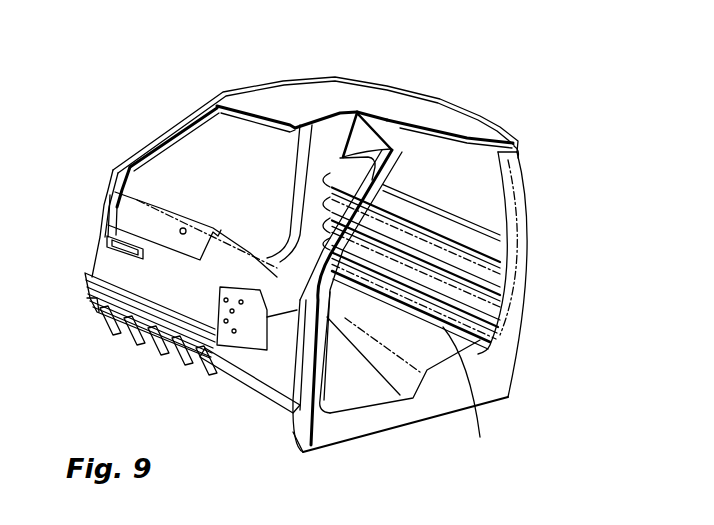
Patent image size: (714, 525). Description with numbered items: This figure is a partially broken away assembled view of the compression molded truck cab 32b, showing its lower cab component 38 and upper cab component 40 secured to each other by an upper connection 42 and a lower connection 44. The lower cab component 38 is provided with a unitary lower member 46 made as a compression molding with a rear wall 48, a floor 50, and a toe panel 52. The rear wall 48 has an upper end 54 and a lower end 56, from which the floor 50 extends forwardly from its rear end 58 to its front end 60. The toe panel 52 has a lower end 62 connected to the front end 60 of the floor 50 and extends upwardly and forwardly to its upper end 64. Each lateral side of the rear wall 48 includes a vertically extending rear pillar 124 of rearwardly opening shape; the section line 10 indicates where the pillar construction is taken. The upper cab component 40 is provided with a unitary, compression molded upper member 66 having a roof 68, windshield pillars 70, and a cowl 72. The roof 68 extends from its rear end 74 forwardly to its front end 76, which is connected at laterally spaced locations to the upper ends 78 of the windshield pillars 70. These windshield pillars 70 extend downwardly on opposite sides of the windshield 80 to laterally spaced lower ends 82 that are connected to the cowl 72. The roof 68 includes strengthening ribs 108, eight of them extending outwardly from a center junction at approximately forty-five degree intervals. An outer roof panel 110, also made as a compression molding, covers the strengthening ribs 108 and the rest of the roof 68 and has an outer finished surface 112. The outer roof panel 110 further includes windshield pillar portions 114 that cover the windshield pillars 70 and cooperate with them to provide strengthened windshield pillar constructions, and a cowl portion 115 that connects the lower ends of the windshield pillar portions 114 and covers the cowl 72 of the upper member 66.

The outer roof panel 110 is at (267, 73).
The outer finished surface 112 is at (267, 100).
The front end of the roof 76 is at (310, 128).
The roof 68 is at (332, 122).
The strengthening ribs 108 is at (395, 105).
The rear end of the roof 74 is at (433, 107).
The truck cab 32b is at (473, 104).
The upper connection 42 is at (520, 153).
The upper end of the rear wall 54 is at (517, 163).
The windshield pillar portions 114 is at (147, 140).
The windshield 80 is at (207, 155).
The upper ends of the windshield pillars 78 is at (213, 118).
The upper cab component 40 is at (98, 200).
The upper member 66 is at (97, 219).
The cowl portion 115 is at (157, 219).
The lower ends of the windshield pillars 82 is at (143, 217).
The windshield pillars 70 is at (163, 160).
The cowl 72 is at (85, 271).
The upper end of the toe panel 64 is at (157, 328).
The lower connection 44 is at (172, 338).
The toe panel 52 is at (190, 366).
The lower end of the toe panel 62 is at (217, 387).
The rear pillar 124 is at (296, 181).
The section line 10 is at (497, 196).
The lower end of the rear wall 56 is at (470, 345).
The rear wall 48 is at (483, 318).
The lower cab component 38 is at (523, 385).
The lower member 46 is at (503, 413).
The floor 50 is at (360, 390).
The front end of the floor 60 is at (328, 408).
The rear end of the floor 58 is at (468, 392).